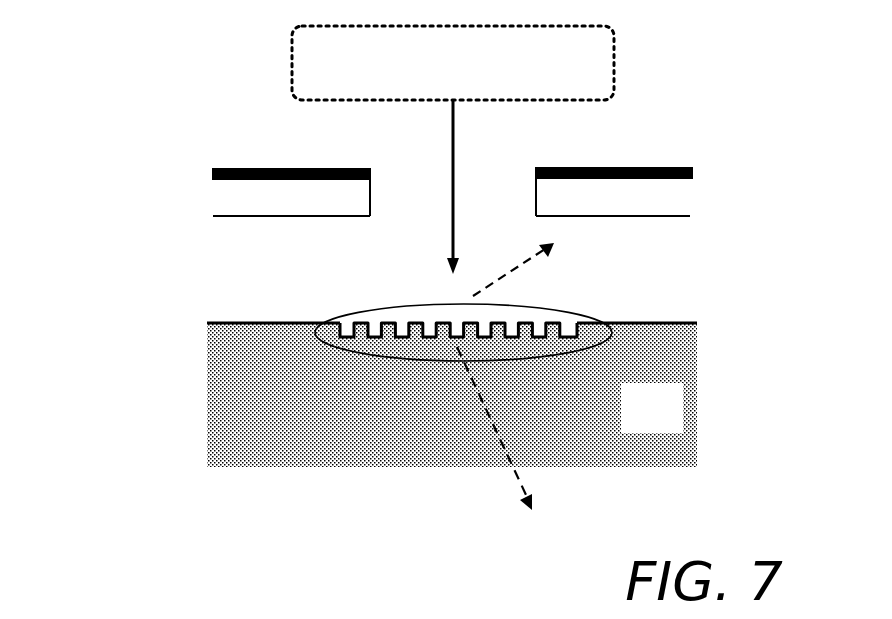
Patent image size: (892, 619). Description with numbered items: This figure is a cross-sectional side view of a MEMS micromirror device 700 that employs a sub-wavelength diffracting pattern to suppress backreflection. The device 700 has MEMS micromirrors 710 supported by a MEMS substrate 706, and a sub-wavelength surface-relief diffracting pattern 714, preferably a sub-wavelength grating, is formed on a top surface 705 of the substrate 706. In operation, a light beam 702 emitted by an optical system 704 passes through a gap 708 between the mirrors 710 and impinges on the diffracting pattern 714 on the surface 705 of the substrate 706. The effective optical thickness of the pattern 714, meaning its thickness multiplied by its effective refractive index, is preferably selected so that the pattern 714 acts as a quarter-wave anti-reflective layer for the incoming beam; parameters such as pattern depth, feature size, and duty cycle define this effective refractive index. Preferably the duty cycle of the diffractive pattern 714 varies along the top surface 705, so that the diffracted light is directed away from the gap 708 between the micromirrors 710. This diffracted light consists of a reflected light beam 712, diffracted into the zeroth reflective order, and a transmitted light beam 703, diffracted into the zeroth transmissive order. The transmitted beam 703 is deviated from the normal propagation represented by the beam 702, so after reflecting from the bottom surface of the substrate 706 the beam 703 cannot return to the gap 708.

The MEMS micromirror device 700 is at (160, 86).
The light beam 702 is at (451, 171).
The transmitted light beam 703 is at (514, 476).
The optical system 704 is at (453, 63).
The top surface 705 is at (661, 310).
The MEMS substrate 706 is at (452, 395).
The gap 708 is at (508, 146).
The MEMS micromirrors 710 is at (236, 168).
The reflected light beam 712 is at (522, 262).
The sub-wavelength surface-relief diffracting pattern 714 is at (368, 312).